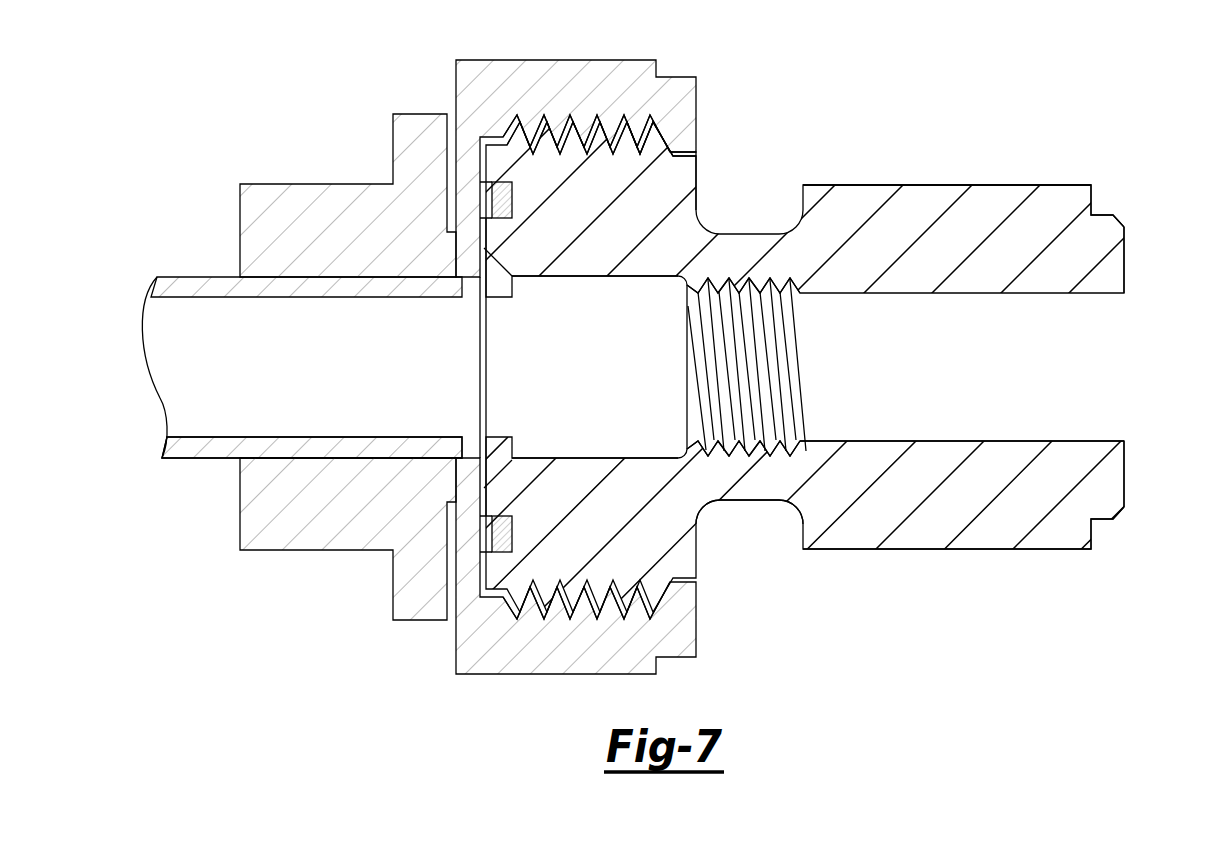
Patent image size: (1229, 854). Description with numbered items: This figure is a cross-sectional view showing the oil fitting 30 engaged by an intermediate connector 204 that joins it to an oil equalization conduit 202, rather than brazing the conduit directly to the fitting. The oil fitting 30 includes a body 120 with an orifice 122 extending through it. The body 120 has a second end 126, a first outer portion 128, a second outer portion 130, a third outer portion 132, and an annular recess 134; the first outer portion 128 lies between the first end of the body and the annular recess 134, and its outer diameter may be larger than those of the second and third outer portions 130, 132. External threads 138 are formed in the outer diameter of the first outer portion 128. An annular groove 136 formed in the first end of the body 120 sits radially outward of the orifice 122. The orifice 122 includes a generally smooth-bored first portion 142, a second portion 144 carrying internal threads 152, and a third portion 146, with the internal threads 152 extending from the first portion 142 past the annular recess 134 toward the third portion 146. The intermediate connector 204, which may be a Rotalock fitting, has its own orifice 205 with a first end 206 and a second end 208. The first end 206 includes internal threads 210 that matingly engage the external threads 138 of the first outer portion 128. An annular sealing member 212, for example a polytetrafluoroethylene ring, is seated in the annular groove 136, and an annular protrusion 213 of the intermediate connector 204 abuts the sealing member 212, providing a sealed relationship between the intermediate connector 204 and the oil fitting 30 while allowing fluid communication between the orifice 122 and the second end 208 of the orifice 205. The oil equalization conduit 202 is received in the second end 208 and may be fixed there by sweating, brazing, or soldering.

The oil fitting 30 is at (1065, 147).
The body 120 is at (345, 165).
The orifice 122 is at (1130, 428).
The second end 126 is at (1126, 265).
The first outer portion 128 is at (664, 127).
The second outer portion 130 is at (1102, 215).
The third outer portion 132 is at (975, 550).
The annular recess 134 is at (753, 508).
The annular groove 136 is at (522, 515).
The external threads 138 is at (612, 150).
The first portion 142 is at (612, 277).
The second portion 144 is at (812, 373).
The third portion 146 is at (1072, 443).
The internal threads 152 is at (768, 447).
The oil equalization conduit 202 is at (203, 265).
The intermediate connector 204 is at (494, 55).
The orifice 205 is at (690, 162).
The first end 206 is at (662, 585).
The second end 208 is at (262, 447).
The internal threads 210 is at (560, 118).
The annular sealing member 212 is at (512, 535).
The annular protrusion 213 is at (487, 222).